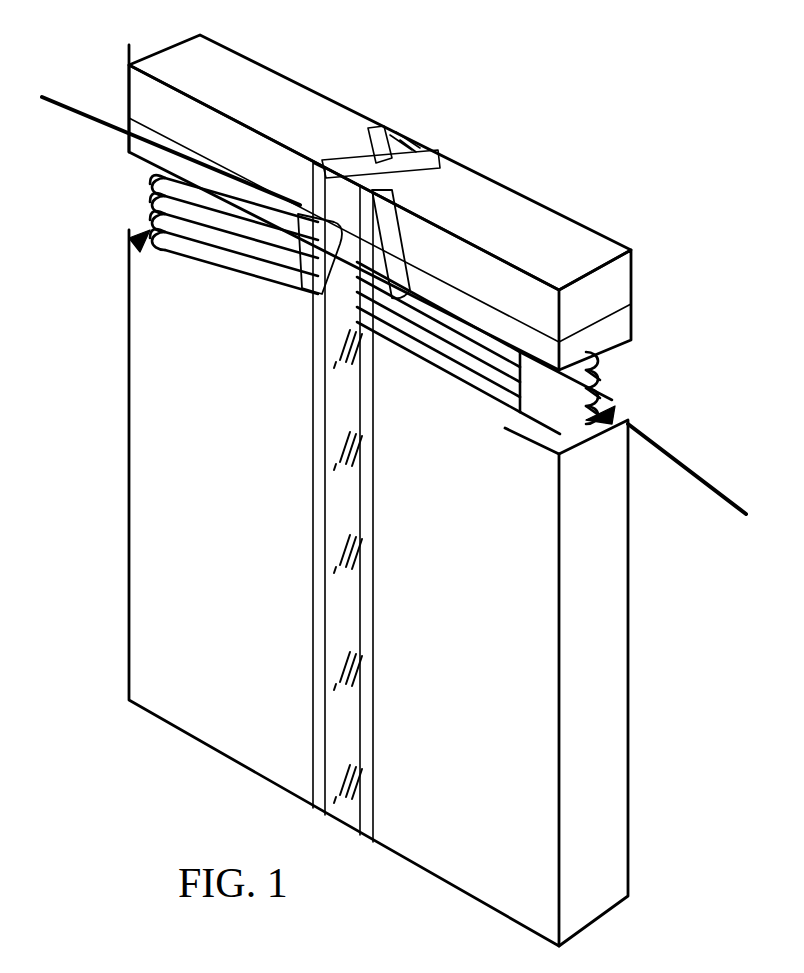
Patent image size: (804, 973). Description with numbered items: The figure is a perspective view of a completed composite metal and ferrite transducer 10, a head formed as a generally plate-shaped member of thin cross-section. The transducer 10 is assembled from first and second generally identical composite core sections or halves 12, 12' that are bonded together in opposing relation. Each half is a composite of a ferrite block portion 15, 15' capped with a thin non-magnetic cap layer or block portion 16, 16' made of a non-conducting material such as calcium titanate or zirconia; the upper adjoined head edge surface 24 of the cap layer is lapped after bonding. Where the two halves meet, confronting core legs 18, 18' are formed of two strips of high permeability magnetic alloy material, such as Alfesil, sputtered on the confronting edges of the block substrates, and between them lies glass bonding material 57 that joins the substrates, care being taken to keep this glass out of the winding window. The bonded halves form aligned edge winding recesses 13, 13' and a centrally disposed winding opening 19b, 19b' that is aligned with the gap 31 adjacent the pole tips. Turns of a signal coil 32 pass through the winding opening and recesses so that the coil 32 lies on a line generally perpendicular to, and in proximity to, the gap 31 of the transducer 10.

The transducer 10 is at (566, 124).
The first core section 12 is at (331, 495).
The second core section 12' is at (532, 658).
The edge winding recess 13 is at (158, 187).
The edge winding recess 13' is at (666, 450).
The ferrite block portion 15 is at (92, 465).
The ferrite block portion 15' is at (669, 658).
The non-magnetic cap layer 16 is at (339, 194).
The non-magnetic cap layer 16' is at (621, 266).
The core leg 18 is at (266, 488).
The core leg 18' is at (419, 514).
The winding opening 19b is at (278, 262).
The winding opening 19b' is at (432, 243).
The head edge surface 24 is at (283, 73).
The gap 31 is at (396, 140).
The signal coil 32 is at (150, 204).
The glass bonding material 57 is at (336, 508).